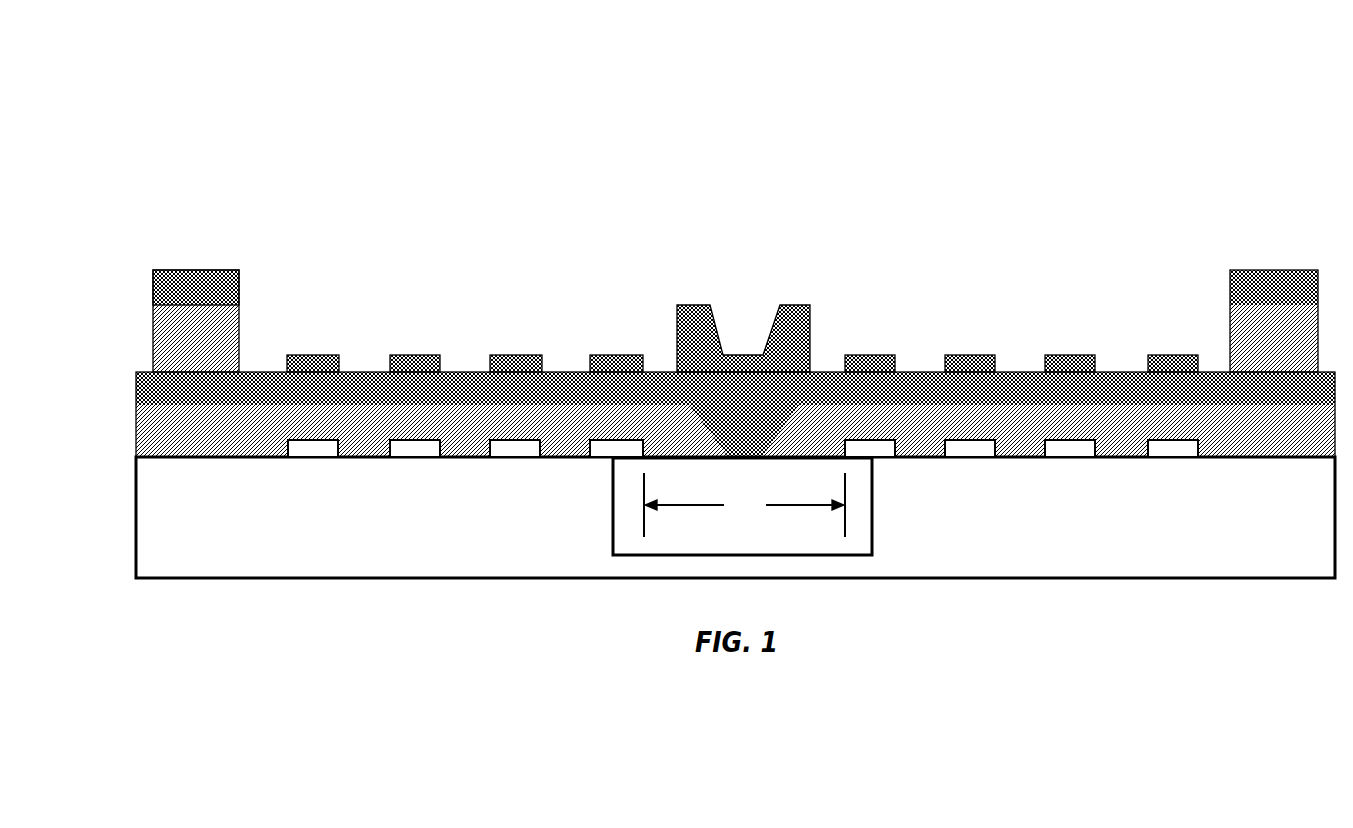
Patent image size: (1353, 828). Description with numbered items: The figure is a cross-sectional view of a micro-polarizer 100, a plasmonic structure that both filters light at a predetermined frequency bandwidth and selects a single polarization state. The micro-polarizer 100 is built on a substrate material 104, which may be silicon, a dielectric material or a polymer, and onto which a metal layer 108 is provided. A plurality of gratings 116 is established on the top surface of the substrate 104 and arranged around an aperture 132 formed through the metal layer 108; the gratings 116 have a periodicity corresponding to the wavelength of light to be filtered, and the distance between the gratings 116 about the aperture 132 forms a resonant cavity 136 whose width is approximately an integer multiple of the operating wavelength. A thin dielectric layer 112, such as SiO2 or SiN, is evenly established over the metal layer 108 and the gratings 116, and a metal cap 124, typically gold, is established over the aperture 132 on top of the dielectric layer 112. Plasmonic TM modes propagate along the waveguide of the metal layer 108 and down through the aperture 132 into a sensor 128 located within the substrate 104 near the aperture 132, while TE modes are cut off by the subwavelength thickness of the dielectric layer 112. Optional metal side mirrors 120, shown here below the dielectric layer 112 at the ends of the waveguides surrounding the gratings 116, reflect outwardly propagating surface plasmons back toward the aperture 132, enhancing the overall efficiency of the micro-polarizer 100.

The micro-polarizer 100 is at (306, 168).
The substrate material 104 is at (115, 529).
The metal layer 108 is at (115, 424).
The dielectric layer 112 is at (130, 287).
The gratings 116 is at (300, 450).
The metal side mirrors 120 is at (223, 322).
The metal cap 124 is at (812, 312).
The sensor 128 is at (873, 508).
The aperture 132 is at (720, 440).
The resonant cavity 136 is at (744, 505).